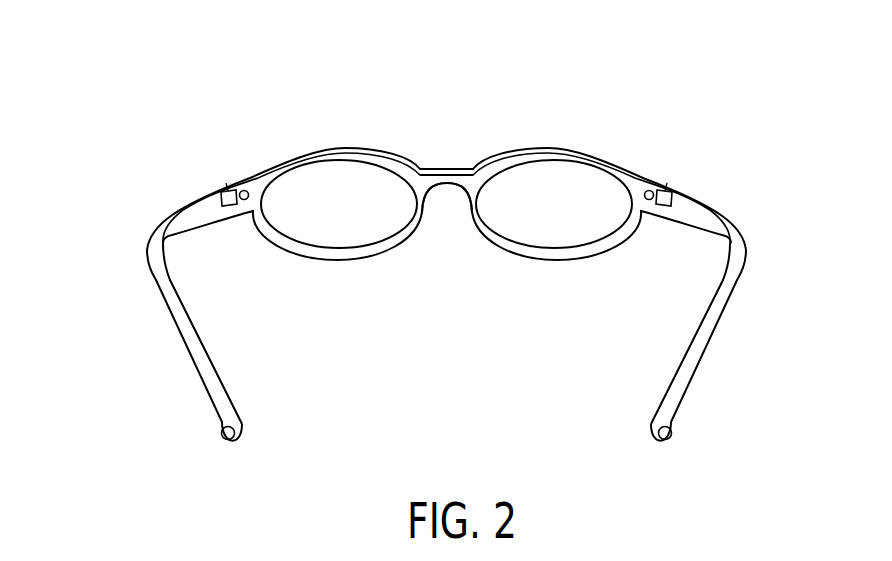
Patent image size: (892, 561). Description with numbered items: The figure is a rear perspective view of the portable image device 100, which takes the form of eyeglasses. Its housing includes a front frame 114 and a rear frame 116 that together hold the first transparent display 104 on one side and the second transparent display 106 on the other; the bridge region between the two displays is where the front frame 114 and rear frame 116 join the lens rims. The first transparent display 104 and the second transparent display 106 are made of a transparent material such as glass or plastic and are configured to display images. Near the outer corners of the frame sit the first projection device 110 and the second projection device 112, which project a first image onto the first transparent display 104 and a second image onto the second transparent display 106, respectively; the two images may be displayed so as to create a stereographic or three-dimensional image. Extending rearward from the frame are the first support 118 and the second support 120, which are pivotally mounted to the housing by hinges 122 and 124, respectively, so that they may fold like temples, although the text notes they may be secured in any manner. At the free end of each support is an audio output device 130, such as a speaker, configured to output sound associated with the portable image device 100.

The portable image device 100 is at (146, 109).
The first transparent display 104 is at (354, 170).
The second transparent display 106 is at (558, 170).
The first projection device 110 is at (246, 190).
The second projection device 112 is at (647, 190).
The front frame 114 is at (446, 168).
The rear frame 116 is at (442, 184).
The first support 118 is at (690, 360).
The second support 120 is at (183, 327).
The hinge 122 is at (228, 190).
The hinge 124 is at (668, 189).
The audio output device 130 is at (225, 442).